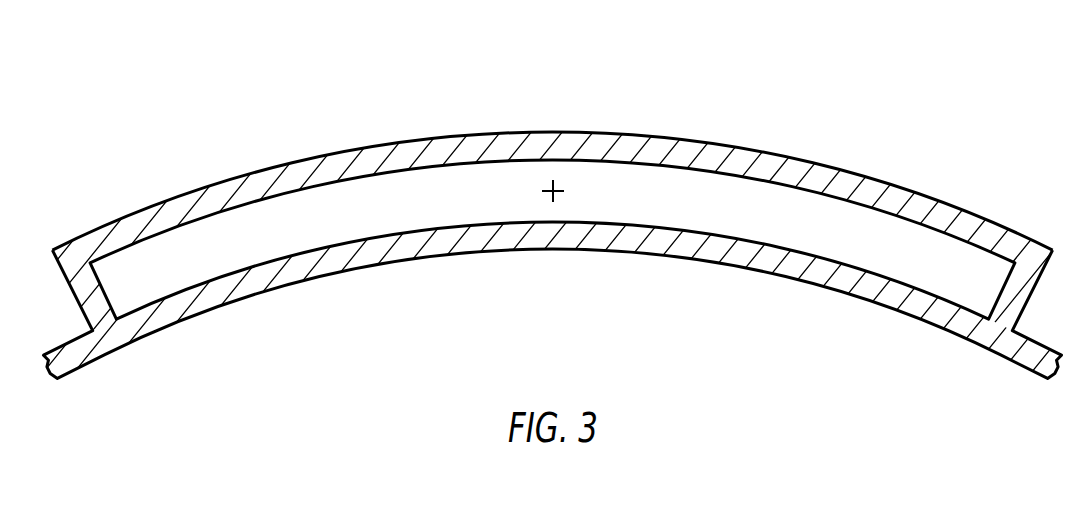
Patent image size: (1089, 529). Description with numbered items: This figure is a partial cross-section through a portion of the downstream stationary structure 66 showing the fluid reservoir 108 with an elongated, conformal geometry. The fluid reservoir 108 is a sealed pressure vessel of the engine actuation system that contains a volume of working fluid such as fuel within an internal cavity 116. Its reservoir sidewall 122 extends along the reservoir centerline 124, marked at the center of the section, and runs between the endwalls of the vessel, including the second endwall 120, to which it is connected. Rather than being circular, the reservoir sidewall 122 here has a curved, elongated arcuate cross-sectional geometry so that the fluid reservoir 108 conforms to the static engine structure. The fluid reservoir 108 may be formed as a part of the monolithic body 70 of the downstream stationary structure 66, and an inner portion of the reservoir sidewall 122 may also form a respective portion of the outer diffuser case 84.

The downstream stationary structure 66 is at (544, 264).
The monolithic body 70 is at (544, 264).
The outer diffuser case 84 is at (532, 250).
The fluid reservoir 108 is at (988, 218).
The internal cavity 116 is at (748, 219).
The second endwall 120 is at (340, 198).
The reservoir sidewall 122 is at (218, 182).
The reservoir centerline 124 is at (562, 185).